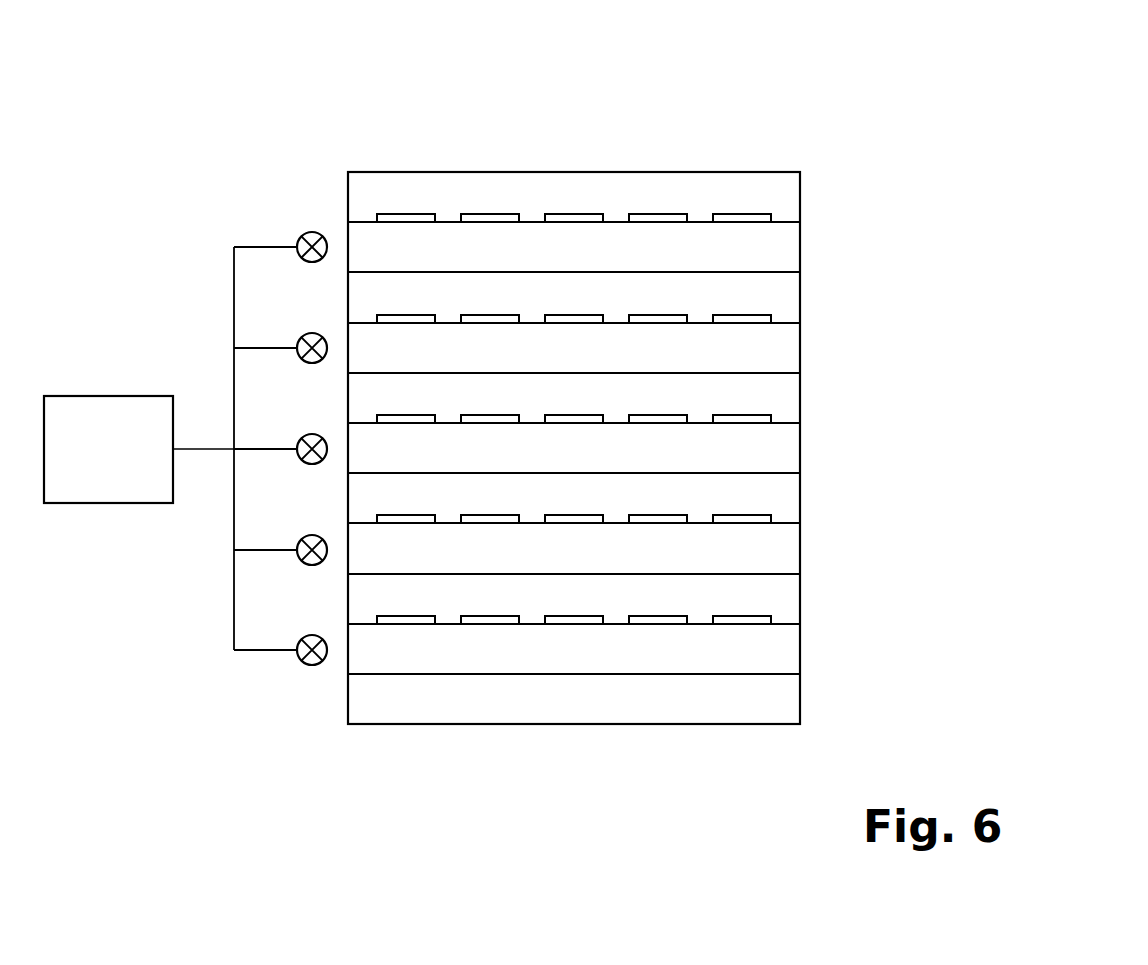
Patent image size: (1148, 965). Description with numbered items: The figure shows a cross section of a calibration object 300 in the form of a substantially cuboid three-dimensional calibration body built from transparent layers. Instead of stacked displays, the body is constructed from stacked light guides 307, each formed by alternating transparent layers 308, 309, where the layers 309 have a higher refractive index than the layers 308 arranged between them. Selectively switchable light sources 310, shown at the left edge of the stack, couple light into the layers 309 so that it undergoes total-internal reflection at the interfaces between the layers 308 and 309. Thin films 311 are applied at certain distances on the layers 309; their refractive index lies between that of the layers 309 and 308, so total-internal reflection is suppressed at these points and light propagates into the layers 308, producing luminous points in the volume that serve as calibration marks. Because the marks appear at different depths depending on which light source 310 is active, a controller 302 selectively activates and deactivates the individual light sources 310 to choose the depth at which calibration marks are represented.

The calibration object 300 is at (680, 64).
The controller 302 is at (107, 395).
The light guide 307 is at (658, 443).
The transparent layer with low refractive index 308 is at (622, 454).
The transparent layer with high refractive index 309 is at (622, 460).
The light source 310 is at (285, 454).
The thin film 311 is at (493, 318).